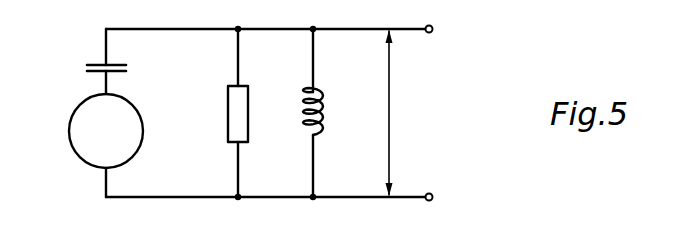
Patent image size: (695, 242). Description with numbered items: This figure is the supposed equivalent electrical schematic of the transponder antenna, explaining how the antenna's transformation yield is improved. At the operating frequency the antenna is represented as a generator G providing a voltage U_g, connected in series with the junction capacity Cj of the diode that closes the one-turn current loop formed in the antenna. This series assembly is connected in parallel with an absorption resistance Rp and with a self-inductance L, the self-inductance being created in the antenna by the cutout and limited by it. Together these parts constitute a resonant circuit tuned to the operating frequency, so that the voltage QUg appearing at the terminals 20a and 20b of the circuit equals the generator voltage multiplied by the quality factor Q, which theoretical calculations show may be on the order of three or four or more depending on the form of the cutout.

The junction capacity Cj is at (102, 63).
The generator G is at (70, 131).
The absorption resistance Rp is at (228, 113).
The self-inductance L is at (325, 111).
The voltage at the terminals QUg is at (413, 113).
The terminal 20a is at (433, 27).
The terminal 20b is at (432, 195).